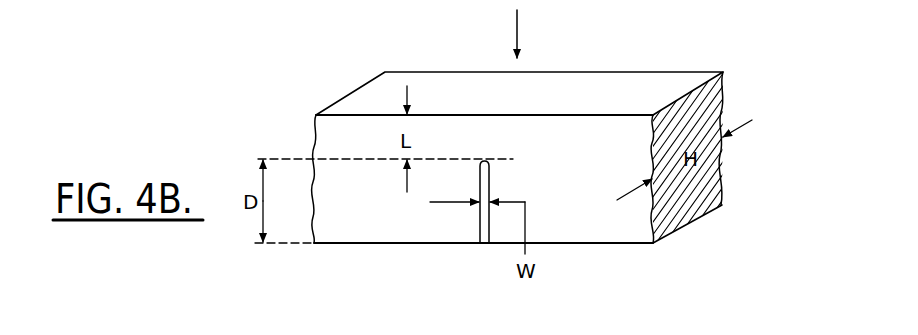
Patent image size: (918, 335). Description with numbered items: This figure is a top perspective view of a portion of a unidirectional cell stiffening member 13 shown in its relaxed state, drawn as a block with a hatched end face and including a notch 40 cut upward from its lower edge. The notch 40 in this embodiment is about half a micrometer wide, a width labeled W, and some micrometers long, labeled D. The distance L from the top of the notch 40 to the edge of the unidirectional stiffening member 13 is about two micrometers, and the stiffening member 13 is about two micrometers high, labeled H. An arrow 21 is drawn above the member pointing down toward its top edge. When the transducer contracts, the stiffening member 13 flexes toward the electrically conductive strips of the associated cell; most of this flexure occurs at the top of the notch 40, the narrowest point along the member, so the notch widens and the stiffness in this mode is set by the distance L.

The unidirectional cell stiffening member 13 is at (338, 88).
The direction of applied force / tool feed 21 is at (519, 28).
The notch 40 is at (482, 245).